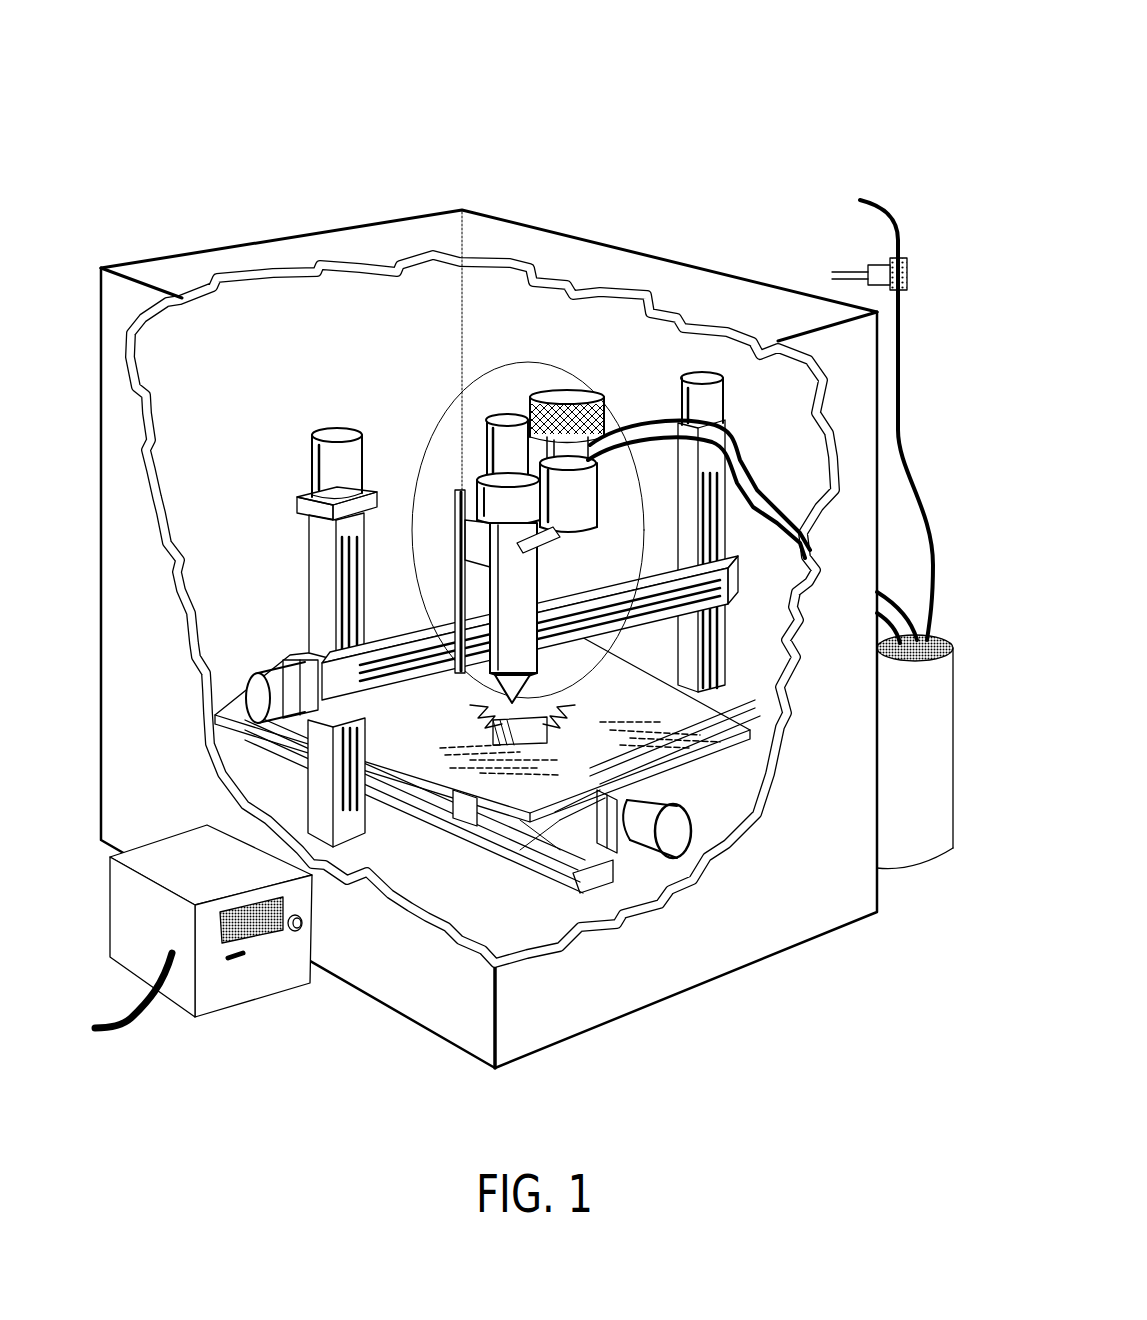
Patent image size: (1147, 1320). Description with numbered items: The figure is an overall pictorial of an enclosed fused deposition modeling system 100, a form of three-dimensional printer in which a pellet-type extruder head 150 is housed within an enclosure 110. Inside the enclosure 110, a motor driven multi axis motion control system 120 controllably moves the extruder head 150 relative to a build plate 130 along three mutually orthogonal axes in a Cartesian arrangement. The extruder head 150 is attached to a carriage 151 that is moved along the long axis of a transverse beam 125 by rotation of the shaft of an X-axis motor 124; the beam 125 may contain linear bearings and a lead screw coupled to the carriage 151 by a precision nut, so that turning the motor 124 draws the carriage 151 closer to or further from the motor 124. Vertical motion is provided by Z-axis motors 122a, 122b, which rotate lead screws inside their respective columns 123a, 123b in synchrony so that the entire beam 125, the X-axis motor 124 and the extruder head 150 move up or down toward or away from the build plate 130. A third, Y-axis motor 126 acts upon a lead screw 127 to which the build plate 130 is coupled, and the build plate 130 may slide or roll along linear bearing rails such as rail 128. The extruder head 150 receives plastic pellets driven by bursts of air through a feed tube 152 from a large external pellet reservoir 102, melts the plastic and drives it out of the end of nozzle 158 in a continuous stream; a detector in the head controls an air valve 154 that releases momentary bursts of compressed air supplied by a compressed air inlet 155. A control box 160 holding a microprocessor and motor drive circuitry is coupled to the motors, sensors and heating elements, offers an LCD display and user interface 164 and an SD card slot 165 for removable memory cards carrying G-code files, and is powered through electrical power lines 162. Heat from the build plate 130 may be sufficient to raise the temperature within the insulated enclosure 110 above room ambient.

The enclosed fused deposition modeling system 100 is at (686, 125).
The external pellet reservoir 102 is at (930, 746).
The enclosure 110 is at (242, 242).
The multi axis motion control system 120 is at (398, 335).
The Z-axis motor 122a is at (310, 448).
The Z-axis motor 122b is at (680, 383).
The column 123a is at (308, 577).
The column 123b is at (678, 633).
The X-axis motor 124 is at (273, 667).
The transverse beam 125 is at (747, 578).
The Y-axis motor 126 is at (677, 862).
The lead screw 127 is at (553, 817).
The linear bearing rail 128 is at (497, 848).
The build plate 130 is at (623, 776).
The extruder head 150 is at (513, 540).
The carriage 151 is at (482, 678).
The feed tube 152 is at (753, 470).
The air valve 154 is at (887, 257).
The compressed air inlet 155 is at (890, 203).
The nozzle 158 is at (550, 712).
The control box 160 is at (239, 954).
The electrical power lines 162 is at (130, 1033).
The LCD display and user interface 164 is at (268, 935).
The SD card slot 165 is at (243, 963).